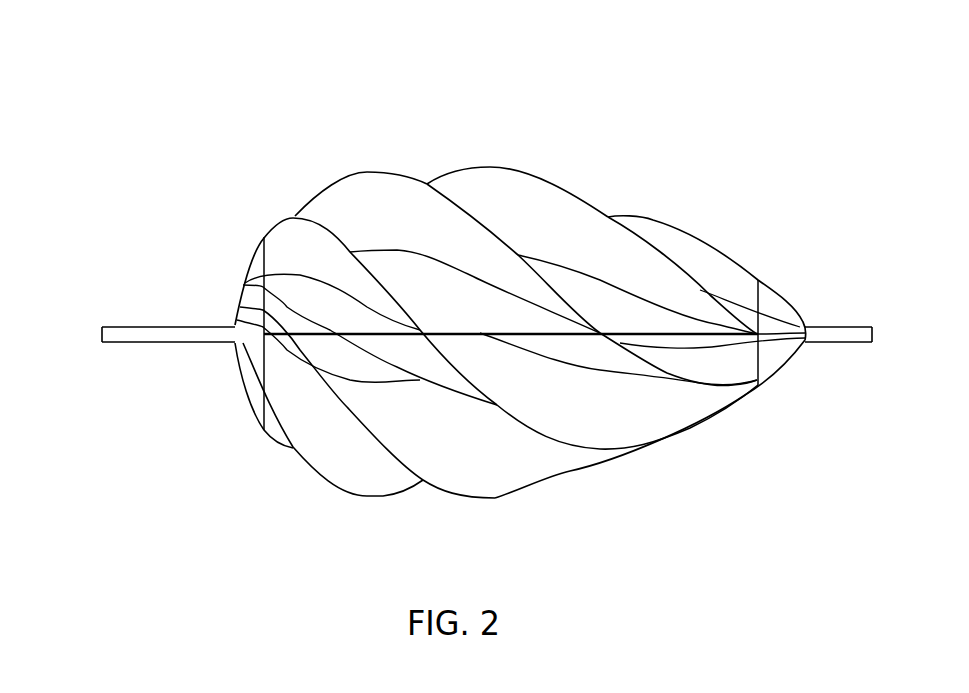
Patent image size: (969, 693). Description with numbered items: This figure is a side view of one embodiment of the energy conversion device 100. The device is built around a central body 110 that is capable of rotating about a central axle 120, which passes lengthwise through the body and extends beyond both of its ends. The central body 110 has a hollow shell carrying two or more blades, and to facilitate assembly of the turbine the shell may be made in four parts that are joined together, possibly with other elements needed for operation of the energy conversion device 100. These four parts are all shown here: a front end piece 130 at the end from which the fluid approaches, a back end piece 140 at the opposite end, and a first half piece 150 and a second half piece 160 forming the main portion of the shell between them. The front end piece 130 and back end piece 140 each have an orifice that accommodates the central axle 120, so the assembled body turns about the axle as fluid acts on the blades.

The energy conversion device 100 is at (451, 256).
The central body 110 is at (502, 154).
The central axle 120 is at (125, 320).
The front end piece 130 is at (237, 265).
The back end piece 140 is at (780, 289).
The first half piece 150 is at (326, 179).
The second half piece 160 is at (676, 443).